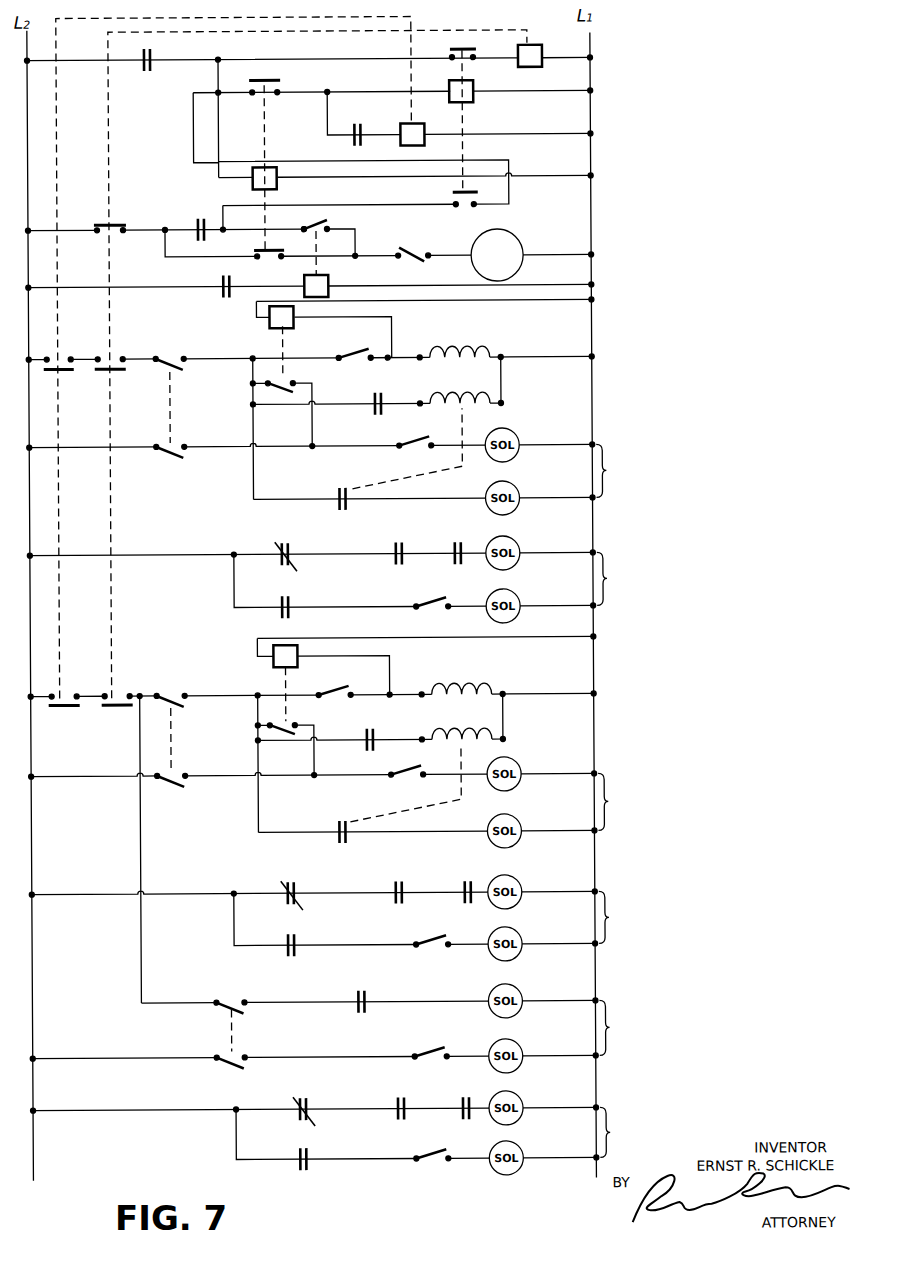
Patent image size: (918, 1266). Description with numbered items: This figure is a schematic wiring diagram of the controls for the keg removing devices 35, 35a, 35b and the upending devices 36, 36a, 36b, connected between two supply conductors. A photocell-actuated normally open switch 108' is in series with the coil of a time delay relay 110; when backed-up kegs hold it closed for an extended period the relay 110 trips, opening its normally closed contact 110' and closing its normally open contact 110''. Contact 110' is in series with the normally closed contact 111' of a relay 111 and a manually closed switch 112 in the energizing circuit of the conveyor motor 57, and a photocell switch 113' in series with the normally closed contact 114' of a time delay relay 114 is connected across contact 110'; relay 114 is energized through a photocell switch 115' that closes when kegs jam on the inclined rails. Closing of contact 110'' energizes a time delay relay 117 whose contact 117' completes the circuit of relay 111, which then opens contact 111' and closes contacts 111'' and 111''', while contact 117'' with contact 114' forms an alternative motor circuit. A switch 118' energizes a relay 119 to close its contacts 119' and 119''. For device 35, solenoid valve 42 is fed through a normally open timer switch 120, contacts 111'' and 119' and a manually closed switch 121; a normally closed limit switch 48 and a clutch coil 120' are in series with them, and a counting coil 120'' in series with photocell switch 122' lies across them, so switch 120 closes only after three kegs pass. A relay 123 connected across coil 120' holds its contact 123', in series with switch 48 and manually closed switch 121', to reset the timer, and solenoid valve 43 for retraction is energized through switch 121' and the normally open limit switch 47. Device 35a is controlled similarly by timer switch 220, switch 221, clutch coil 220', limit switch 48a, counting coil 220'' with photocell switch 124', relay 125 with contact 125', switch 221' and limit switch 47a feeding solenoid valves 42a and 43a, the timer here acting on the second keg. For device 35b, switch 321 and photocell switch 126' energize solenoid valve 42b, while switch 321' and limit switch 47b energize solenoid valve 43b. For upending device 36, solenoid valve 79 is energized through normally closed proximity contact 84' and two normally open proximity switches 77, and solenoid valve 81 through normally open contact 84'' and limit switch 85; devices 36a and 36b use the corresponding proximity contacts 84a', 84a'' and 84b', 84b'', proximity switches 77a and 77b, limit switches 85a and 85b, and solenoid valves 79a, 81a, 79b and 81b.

The normally open switch 108' is at (170, 55).
The normally open contact 110'' is at (288, 80).
The normally open contact 117' is at (470, 43).
The relay 111 is at (549, 47).
The time delay relay 117 is at (482, 83).
The switch 118' is at (368, 125).
The relay 119 is at (425, 124).
The time delay relay 110 is at (289, 184).
The normally open contact 117'' is at (442, 193).
The normally closed contact 111' is at (122, 218).
The normally open switch 113' is at (202, 221).
The normally closed contact 110' is at (282, 244).
The normally closed contact 114' is at (337, 219).
The motor 57 is at (515, 240).
The manually closed switch 112 is at (419, 262).
The time delay relay 114 is at (338, 279).
The normally open switch 115' is at (201, 281).
The relay 123 is at (263, 330).
The normally open contact 119' is at (73, 346).
The normally open contact 111'' is at (128, 345).
The manually closed switch 121 is at (181, 353).
The normally closed limit switch 48 is at (357, 351).
The clutch coil 120' is at (461, 332).
The normally open relay contact 123' is at (325, 373).
The normally open switch 122' is at (398, 389).
The stepping or counting coil 120'' is at (460, 381).
The normally open limit switch 47 is at (420, 439).
The solenoid valve 43 is at (514, 438).
The normally open timer switch 120 is at (365, 481).
The solenoid valve 42 is at (512, 492).
The manually closed switch 121' is at (161, 465).
The normally closed contact 84' is at (298, 544).
The normally open proximity switches 77 is at (456, 542).
The solenoid valve 79 is at (514, 543).
The normally open contact 84'' is at (307, 595).
The normally open limit switch 85 is at (441, 598).
The solenoid valve 81 is at (513, 600).
The relay 125 is at (260, 664).
The normally open contact 119'' is at (80, 674).
The normally open contact 111''' is at (138, 678).
The manually closed switch 221 is at (181, 683).
The limit switch 48a is at (338, 688).
The clutch coil 220' is at (461, 667).
The contact 125' is at (307, 709).
The normally open switch 124' is at (372, 726).
The counting or stepping coil 220'' is at (453, 717).
The normally open limit switch 47a is at (412, 770).
The solenoid valve 43a is at (514, 768).
The normally open timer switch 220 is at (350, 815).
The solenoid valve 42a is at (513, 823).
The manually closed switch 221' is at (175, 799).
The normally closed contact 84a' is at (315, 881).
The normally open proximity switches 77a is at (463, 882).
The solenoid valve 79a is at (490, 880).
The normally open contact 84a'' is at (325, 932).
The normally open limit switch 85a is at (436, 938).
The solenoid valve 81a is at (514, 936).
The manually closed switch 321 is at (233, 988).
The normally open switch 126' is at (368, 986).
The solenoid valve 42b is at (514, 992).
The normally open limit switch 47b is at (435, 1050).
The solenoid valve 43b is at (515, 1048).
The manually closed switch 321' is at (233, 1075).
The normally closed contact 84b' is at (325, 1101).
The normally open proximity switches 77b is at (458, 1102).
The solenoid valve 79b is at (514, 1100).
The normally open contact 84b'' is at (312, 1171).
The normally open limit switch 85b is at (437, 1154).
The solenoid valve 81b is at (515, 1152).
The keg removing device 35 is at (699, 470).
The upending device 36 is at (685, 578).
The keg removing device 35a is at (705, 801).
The upending device 36a is at (691, 916).
The keg removing device 35b is at (707, 1027).
The upending device 36b is at (692, 1131).